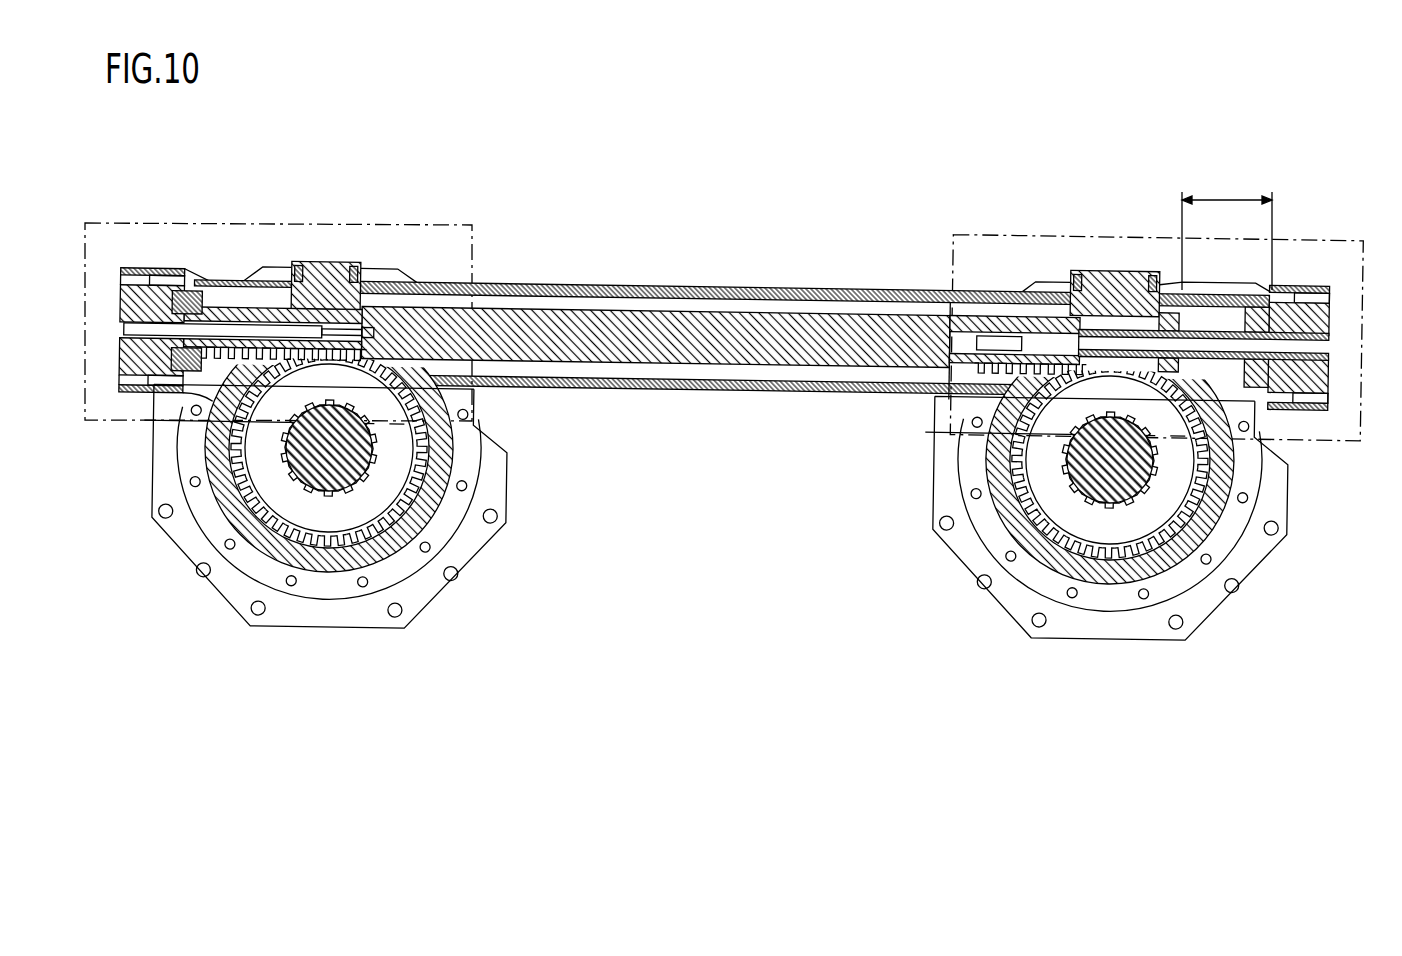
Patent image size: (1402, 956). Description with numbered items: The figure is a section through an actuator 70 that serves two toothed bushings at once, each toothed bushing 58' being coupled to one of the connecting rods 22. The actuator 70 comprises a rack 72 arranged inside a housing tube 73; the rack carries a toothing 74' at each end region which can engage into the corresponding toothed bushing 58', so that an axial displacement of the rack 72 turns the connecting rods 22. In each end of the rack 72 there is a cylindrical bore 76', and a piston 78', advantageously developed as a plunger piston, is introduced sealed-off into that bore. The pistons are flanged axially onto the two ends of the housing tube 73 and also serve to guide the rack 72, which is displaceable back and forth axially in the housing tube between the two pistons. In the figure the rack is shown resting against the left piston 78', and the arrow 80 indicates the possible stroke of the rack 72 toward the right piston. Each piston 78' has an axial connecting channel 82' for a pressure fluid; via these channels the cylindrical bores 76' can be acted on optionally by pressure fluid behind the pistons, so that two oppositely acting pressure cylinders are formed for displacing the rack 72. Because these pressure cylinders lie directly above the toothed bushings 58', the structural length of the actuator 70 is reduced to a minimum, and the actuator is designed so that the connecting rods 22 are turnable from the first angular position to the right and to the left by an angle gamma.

The connecting rod 22 is at (376, 447).
The toothed bushing 58' is at (325, 499).
The actuator 70 is at (725, 274).
The rack 72 is at (641, 312).
The housing tube 73 is at (792, 292).
The toothing 74' is at (275, 257).
The cylindrical bore 76' is at (311, 231).
The piston 78' is at (161, 273).
The arrow 80 is at (1233, 200).
The connecting channel 82' is at (224, 415).